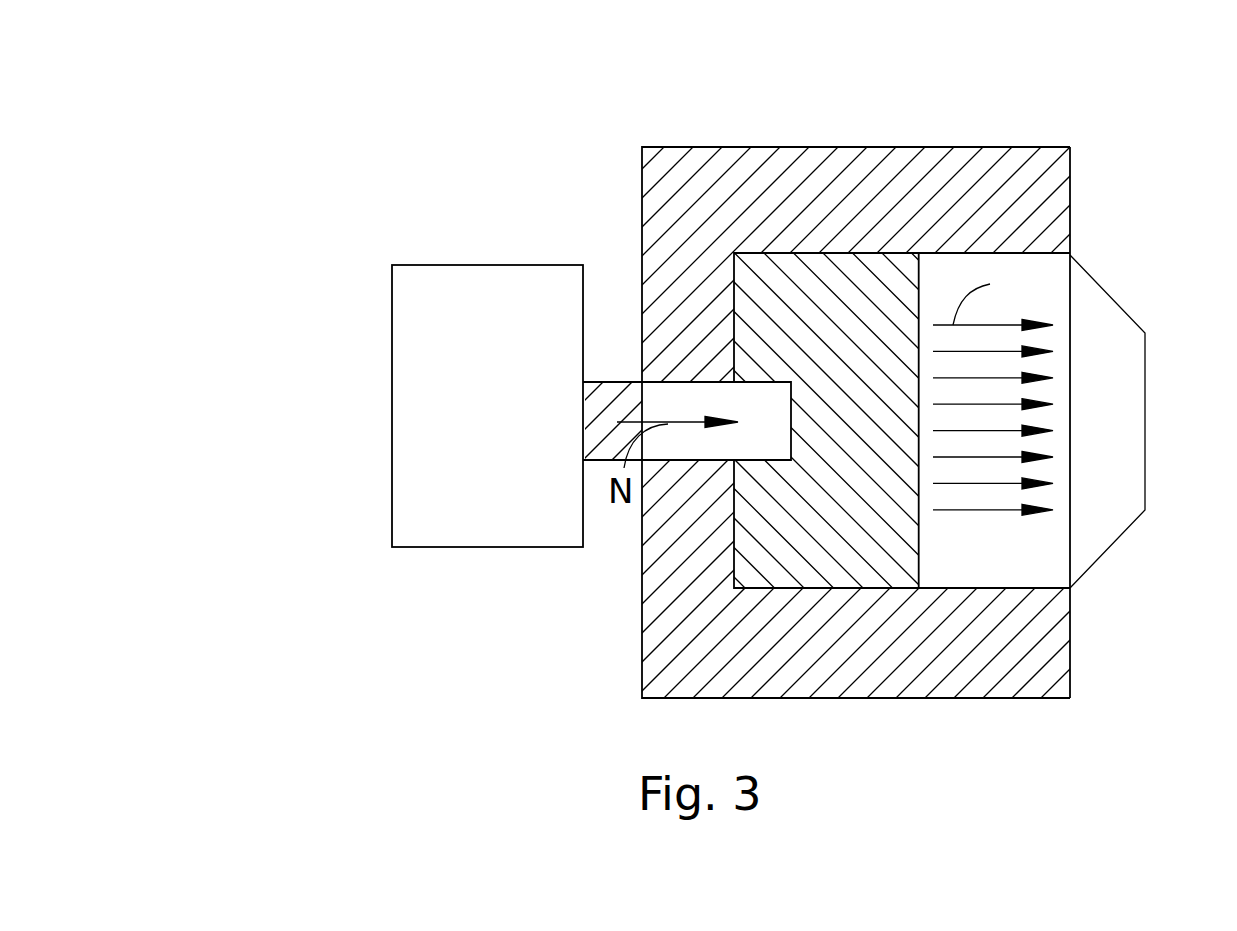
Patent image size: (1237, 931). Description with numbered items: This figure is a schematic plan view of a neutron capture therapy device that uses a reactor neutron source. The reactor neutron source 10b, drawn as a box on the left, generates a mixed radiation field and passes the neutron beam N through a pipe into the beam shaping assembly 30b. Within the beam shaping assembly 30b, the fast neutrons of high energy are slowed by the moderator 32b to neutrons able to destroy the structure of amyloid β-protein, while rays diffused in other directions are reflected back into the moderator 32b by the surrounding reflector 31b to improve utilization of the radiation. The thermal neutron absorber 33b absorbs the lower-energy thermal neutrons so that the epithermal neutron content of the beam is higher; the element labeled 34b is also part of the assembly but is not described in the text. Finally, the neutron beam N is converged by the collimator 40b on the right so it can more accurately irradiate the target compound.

The reactor neutron source 10b is at (403, 406).
The beam shaping assembly 30b is at (675, 373).
The reflector 31b is at (658, 175).
The moderator 32b is at (770, 557).
The thermal neutron absorber 33b is at (919, 545).
The outlet wall 34b is at (1070, 190).
The collimator 40b is at (1100, 507).